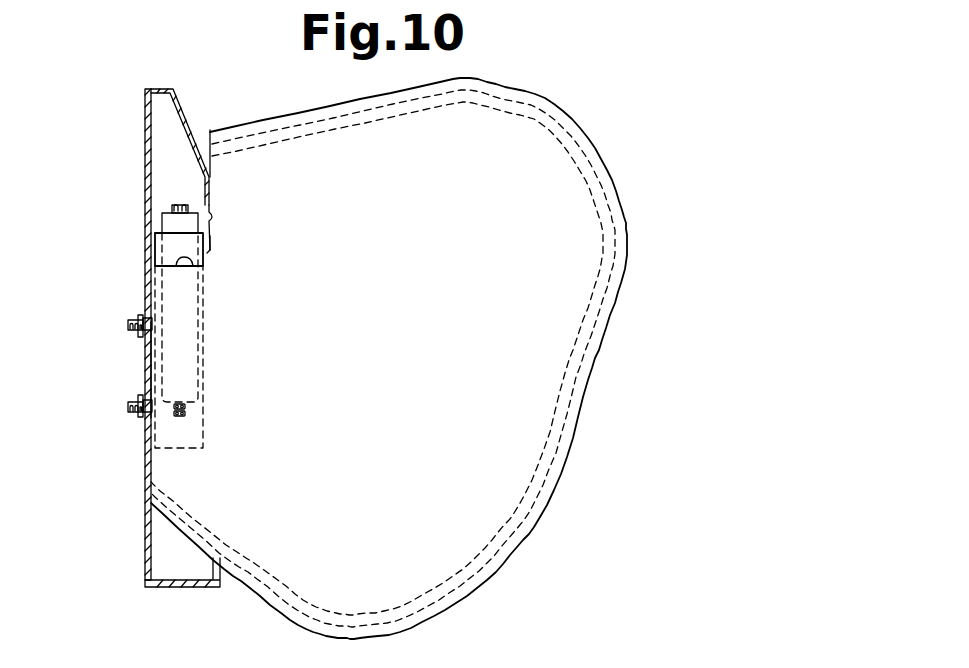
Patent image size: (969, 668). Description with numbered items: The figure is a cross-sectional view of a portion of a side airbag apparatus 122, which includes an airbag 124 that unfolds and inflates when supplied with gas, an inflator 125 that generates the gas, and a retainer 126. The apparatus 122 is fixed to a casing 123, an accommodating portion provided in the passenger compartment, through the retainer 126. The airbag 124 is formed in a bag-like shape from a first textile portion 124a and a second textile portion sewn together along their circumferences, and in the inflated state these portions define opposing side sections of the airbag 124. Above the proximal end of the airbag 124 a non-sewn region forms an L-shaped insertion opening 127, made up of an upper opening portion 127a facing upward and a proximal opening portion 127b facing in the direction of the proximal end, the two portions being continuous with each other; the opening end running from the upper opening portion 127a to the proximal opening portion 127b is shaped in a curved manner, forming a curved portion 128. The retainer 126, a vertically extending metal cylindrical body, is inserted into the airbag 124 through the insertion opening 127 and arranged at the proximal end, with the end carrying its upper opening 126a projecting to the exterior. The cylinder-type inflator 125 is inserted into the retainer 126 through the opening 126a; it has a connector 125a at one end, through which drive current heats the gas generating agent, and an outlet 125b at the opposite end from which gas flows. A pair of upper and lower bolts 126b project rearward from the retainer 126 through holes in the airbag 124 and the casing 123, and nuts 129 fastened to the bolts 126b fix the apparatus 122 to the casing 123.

The side airbag apparatus 122 is at (134, 336).
The casing 123 is at (146, 167).
The airbag 124 is at (580, 127).
The first textile portion 124a is at (616, 302).
The inflator 125 is at (160, 216).
The connector 125a is at (180, 206).
The outlet 125b is at (173, 420).
The retainer 126 is at (156, 250).
The opening 126a is at (165, 229).
The bolts 126b is at (141, 327).
The insertion opening 127 is at (203, 150).
The upper opening portion 127a is at (191, 263).
The proximal opening portion 127b is at (212, 216).
The curved portion 128 is at (207, 251).
The nuts 129 is at (138, 318).